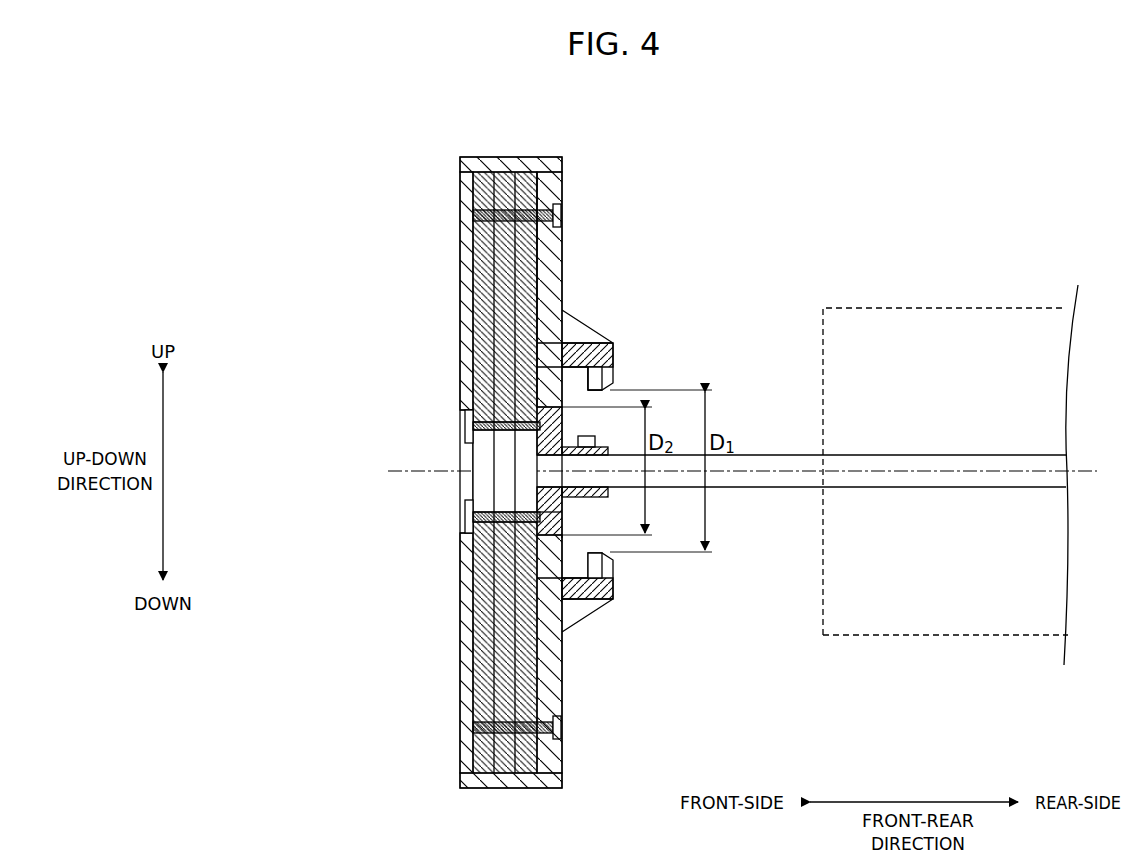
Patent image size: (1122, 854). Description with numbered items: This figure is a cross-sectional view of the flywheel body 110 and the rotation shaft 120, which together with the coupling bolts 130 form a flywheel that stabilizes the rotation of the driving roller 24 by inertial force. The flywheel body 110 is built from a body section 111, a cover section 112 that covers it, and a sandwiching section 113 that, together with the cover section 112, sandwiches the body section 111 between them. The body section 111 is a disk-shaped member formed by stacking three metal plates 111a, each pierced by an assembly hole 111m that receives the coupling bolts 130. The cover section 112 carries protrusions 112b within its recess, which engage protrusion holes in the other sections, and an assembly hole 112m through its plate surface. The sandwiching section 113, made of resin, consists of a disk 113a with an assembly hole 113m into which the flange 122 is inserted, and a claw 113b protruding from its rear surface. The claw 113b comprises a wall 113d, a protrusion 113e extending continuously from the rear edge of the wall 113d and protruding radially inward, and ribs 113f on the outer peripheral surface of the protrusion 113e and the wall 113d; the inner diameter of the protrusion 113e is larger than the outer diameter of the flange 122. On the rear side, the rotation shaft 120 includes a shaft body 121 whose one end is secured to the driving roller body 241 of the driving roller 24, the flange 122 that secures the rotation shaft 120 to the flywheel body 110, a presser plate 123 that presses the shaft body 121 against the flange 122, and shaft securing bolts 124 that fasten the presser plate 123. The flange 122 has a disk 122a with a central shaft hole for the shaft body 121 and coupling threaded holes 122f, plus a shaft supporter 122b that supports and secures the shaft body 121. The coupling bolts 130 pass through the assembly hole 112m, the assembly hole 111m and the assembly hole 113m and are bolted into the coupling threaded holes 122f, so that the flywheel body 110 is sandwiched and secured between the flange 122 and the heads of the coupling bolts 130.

The flywheel body 110 is at (438, 251).
The body section 111 is at (478, 196).
The metal plates 111a is at (538, 300).
The assembly hole 111m is at (483, 426).
The cover section 112 is at (462, 288).
The assembly hole 112m is at (476, 583).
The protrusions 112b is at (497, 734).
The sandwiching section 113 is at (563, 183).
The disk 113a is at (563, 252).
The claw 113b is at (578, 366).
The wall 113d is at (590, 372).
The protrusion 113e is at (604, 376).
The ribs 113f is at (577, 613).
The assembly hole 113m is at (540, 425).
The coupling bolts 130 is at (465, 424).
The rotation shaft 120 is at (801, 461).
The shaft body 121 is at (790, 455).
The flange 122 is at (600, 507).
The disk 122a is at (562, 538).
The shaft supporter 122b is at (600, 500).
The coupling threaded holes 122f is at (556, 513).
The presser plate 123 is at (608, 447).
The shaft securing bolts 124 is at (588, 436).
The driving roller 24 is at (952, 402).
The driving roller body 241 is at (888, 308).